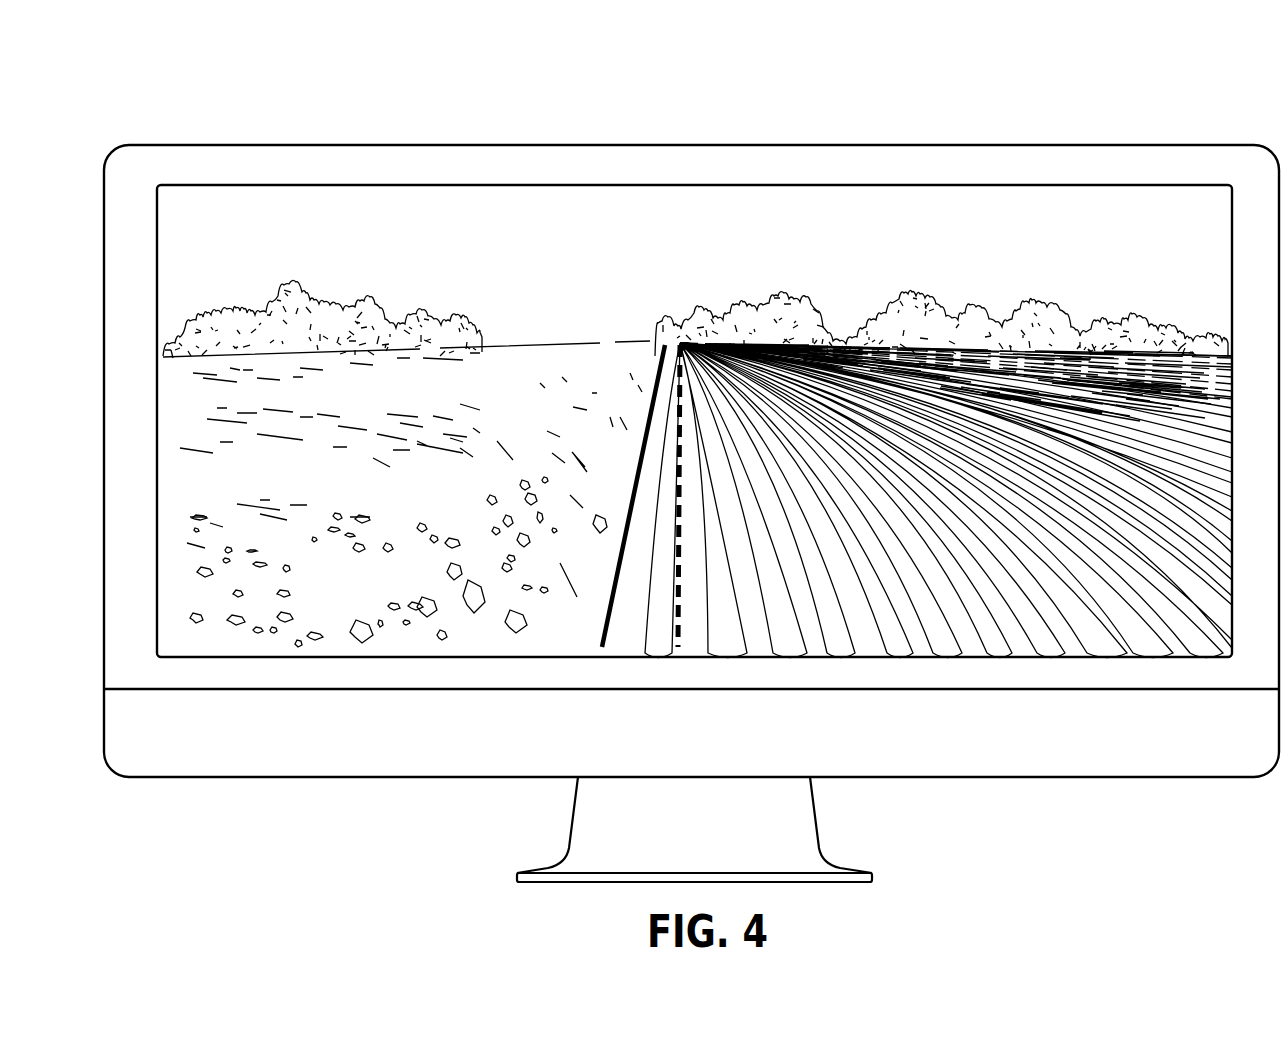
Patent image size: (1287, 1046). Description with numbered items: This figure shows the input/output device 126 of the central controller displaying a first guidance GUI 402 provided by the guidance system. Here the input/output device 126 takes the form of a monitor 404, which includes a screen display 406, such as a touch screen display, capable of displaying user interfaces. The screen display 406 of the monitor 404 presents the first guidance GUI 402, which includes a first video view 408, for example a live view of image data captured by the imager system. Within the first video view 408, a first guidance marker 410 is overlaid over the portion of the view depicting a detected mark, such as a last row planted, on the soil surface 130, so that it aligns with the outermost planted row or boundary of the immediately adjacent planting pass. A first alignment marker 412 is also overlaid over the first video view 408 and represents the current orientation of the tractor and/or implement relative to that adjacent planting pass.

The input/output device 126 is at (691, 465).
The first guidance GUI 402 is at (437, 183).
The monitor 404 is at (637, 144).
The screen display 406 is at (833, 184).
The first video view 408 is at (175, 310).
The soil surface 130 is at (448, 504).
The first alignment marker 412 is at (647, 423).
The first guidance marker 410 is at (680, 430).